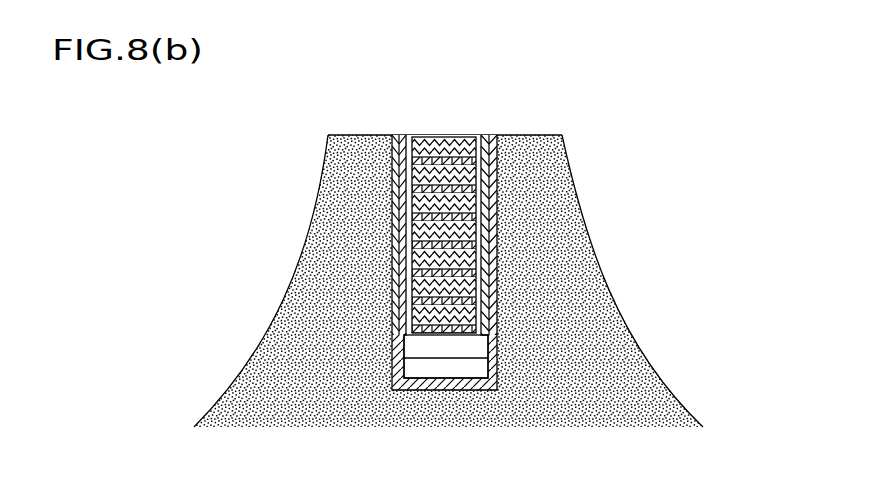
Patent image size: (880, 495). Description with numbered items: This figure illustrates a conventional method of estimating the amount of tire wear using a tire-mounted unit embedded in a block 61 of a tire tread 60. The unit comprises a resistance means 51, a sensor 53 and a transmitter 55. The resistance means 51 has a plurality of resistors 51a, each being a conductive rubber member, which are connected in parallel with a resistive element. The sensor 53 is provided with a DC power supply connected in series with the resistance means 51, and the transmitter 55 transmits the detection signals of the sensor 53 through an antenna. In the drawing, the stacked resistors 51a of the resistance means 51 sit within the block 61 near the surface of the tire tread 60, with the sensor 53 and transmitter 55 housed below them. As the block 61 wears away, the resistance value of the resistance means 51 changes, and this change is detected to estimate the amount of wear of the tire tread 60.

The tire tread 60 is at (455, 249).
The block 61 is at (590, 254).
The sensor 53 is at (392, 332).
The resistance means 51 is at (378, 202).
The resistors 51a is at (410, 160).
The transmitter 55 is at (467, 368).